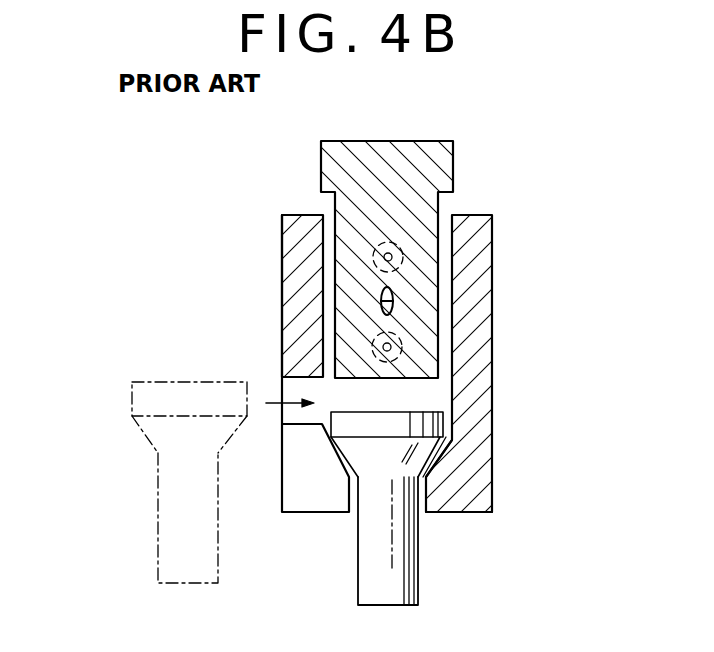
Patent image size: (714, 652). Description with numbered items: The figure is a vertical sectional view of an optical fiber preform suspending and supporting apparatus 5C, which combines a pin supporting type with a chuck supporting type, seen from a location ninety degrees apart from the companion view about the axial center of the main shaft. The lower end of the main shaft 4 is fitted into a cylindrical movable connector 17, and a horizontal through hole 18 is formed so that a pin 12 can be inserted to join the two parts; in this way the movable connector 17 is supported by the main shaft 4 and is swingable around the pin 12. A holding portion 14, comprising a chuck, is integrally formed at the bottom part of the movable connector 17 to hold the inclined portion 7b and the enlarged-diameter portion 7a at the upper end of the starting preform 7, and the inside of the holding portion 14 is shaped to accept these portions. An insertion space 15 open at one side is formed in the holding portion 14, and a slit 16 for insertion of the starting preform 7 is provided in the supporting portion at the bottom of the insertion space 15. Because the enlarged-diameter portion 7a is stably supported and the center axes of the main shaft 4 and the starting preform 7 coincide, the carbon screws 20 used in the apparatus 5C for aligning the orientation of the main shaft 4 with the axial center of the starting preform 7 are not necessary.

The main shaft 4 is at (403, 157).
The movable connector 17 is at (297, 225).
The carbon screws 20 is at (373, 258).
The pin 12 is at (380, 296).
The through hole 18 is at (398, 291).
The optical fiber preform suspending and supporting apparatus 5C is at (499, 243).
The slit 16 is at (298, 383).
The insertion space 15 is at (432, 392).
The enlarged-diameter portion 7a is at (447, 411).
The holding portion 14 is at (462, 450).
The inclined portion 7b is at (440, 458).
The starting preform 7 is at (319, 474).